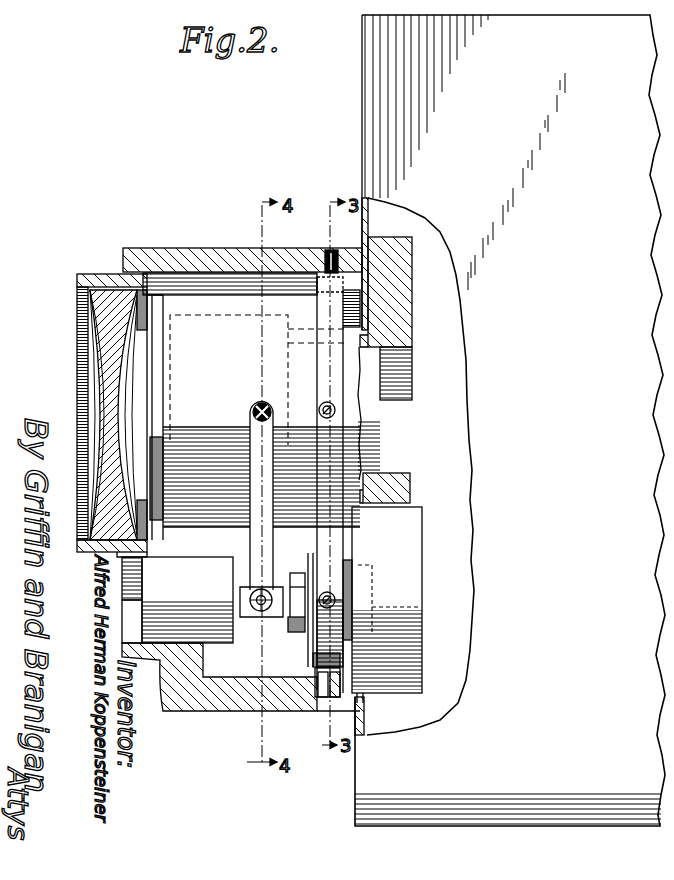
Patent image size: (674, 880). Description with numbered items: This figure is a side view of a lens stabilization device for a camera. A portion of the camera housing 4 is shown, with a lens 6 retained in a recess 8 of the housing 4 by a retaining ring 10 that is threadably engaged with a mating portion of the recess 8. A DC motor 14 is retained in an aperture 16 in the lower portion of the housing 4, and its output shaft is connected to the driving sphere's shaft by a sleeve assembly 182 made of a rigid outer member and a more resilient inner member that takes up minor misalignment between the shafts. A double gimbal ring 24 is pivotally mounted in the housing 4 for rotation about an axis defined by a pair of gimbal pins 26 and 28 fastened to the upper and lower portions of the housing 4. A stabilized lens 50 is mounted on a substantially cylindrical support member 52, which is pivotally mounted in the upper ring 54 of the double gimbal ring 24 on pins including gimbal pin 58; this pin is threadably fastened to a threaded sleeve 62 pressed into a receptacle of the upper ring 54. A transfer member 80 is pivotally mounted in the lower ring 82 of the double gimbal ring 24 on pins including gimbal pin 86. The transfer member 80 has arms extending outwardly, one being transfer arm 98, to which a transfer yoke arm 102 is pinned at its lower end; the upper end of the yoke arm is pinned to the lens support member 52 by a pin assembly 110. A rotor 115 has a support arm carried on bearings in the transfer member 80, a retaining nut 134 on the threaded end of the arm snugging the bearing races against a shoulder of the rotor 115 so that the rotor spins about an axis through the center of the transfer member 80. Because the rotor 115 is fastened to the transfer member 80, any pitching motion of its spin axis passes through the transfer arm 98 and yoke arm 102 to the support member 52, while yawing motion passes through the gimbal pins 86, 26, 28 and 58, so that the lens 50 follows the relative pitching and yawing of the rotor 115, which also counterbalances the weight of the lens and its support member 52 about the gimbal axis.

The housing 4 is at (153, 252).
The lens 6 is at (88, 318).
The recess 8 is at (113, 275).
The retaining ring 10 is at (78, 288).
The DC motor 14 is at (212, 637).
The aperture 16 is at (143, 548).
The double gimbal ring 24 is at (330, 542).
The gimbal pin 26 is at (325, 257).
The gimbal pin 28 is at (309, 712).
The stabilized lens 50 is at (130, 377).
The support member 52 is at (217, 297).
The upper ring 54 is at (320, 297).
The gimbal pin 58 is at (328, 402).
The threaded sleeve 62 is at (313, 413).
The transfer member 80 is at (308, 642).
The lower ring 82 is at (317, 650).
The gimbal pin 86 is at (333, 598).
The transfer arm 98 is at (275, 612).
The transfer yoke arm 102 is at (253, 545).
The pin assembly 110 is at (253, 403).
The rotor 115 is at (422, 548).
The retaining nut 134 is at (295, 573).
The sleeve assembly 182 is at (242, 585).